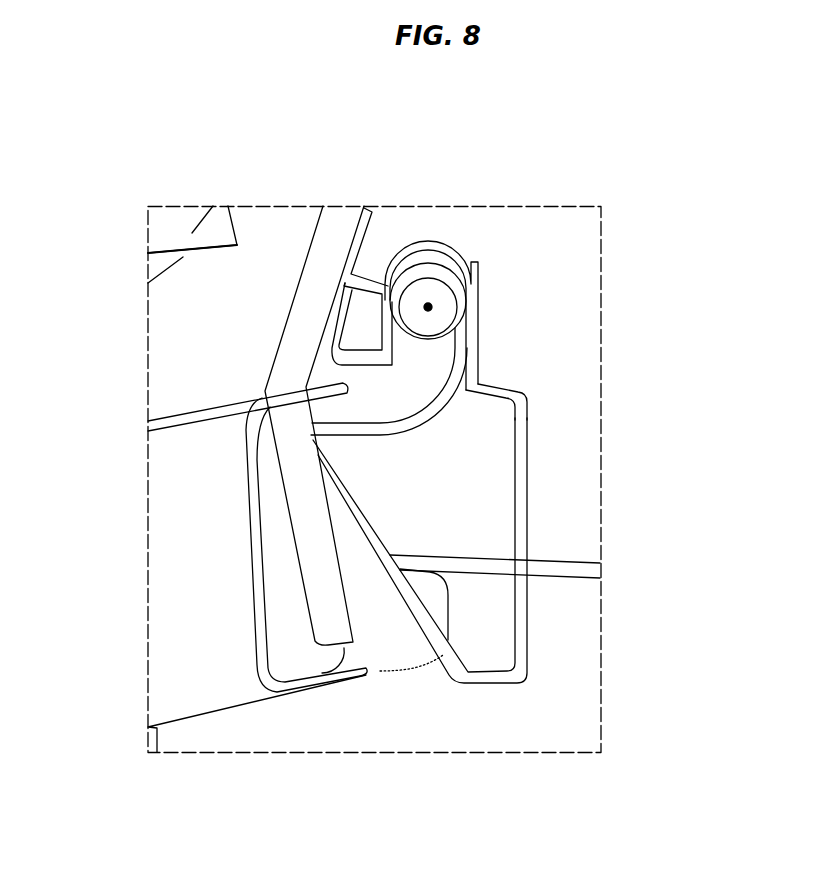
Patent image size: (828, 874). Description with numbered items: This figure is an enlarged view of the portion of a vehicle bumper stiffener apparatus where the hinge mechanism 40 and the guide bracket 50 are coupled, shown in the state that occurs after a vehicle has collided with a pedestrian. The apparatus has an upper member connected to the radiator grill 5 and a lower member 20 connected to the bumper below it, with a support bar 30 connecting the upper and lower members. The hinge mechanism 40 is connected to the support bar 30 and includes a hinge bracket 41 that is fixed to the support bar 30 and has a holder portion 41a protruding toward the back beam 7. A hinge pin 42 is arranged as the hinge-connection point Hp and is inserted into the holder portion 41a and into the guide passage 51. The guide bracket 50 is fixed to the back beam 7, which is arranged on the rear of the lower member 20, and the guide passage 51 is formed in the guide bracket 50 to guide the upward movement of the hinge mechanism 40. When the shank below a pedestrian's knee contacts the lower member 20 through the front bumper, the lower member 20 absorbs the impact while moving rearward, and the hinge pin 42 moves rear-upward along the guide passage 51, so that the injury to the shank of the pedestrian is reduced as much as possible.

The radiator grill 5 is at (178, 237).
The back beam 7 is at (371, 718).
The lower member 20 is at (175, 462).
The support bar 30 is at (298, 300).
The hinge mechanism 40 is at (375, 308).
The hinge bracket 41 is at (367, 243).
The holder portion 41a is at (428, 262).
The hinge pin 42 is at (470, 290).
The guide bracket 50 is at (527, 465).
The guide passage 51 is at (467, 357).
The hinge-connection point Hp is at (430, 305).